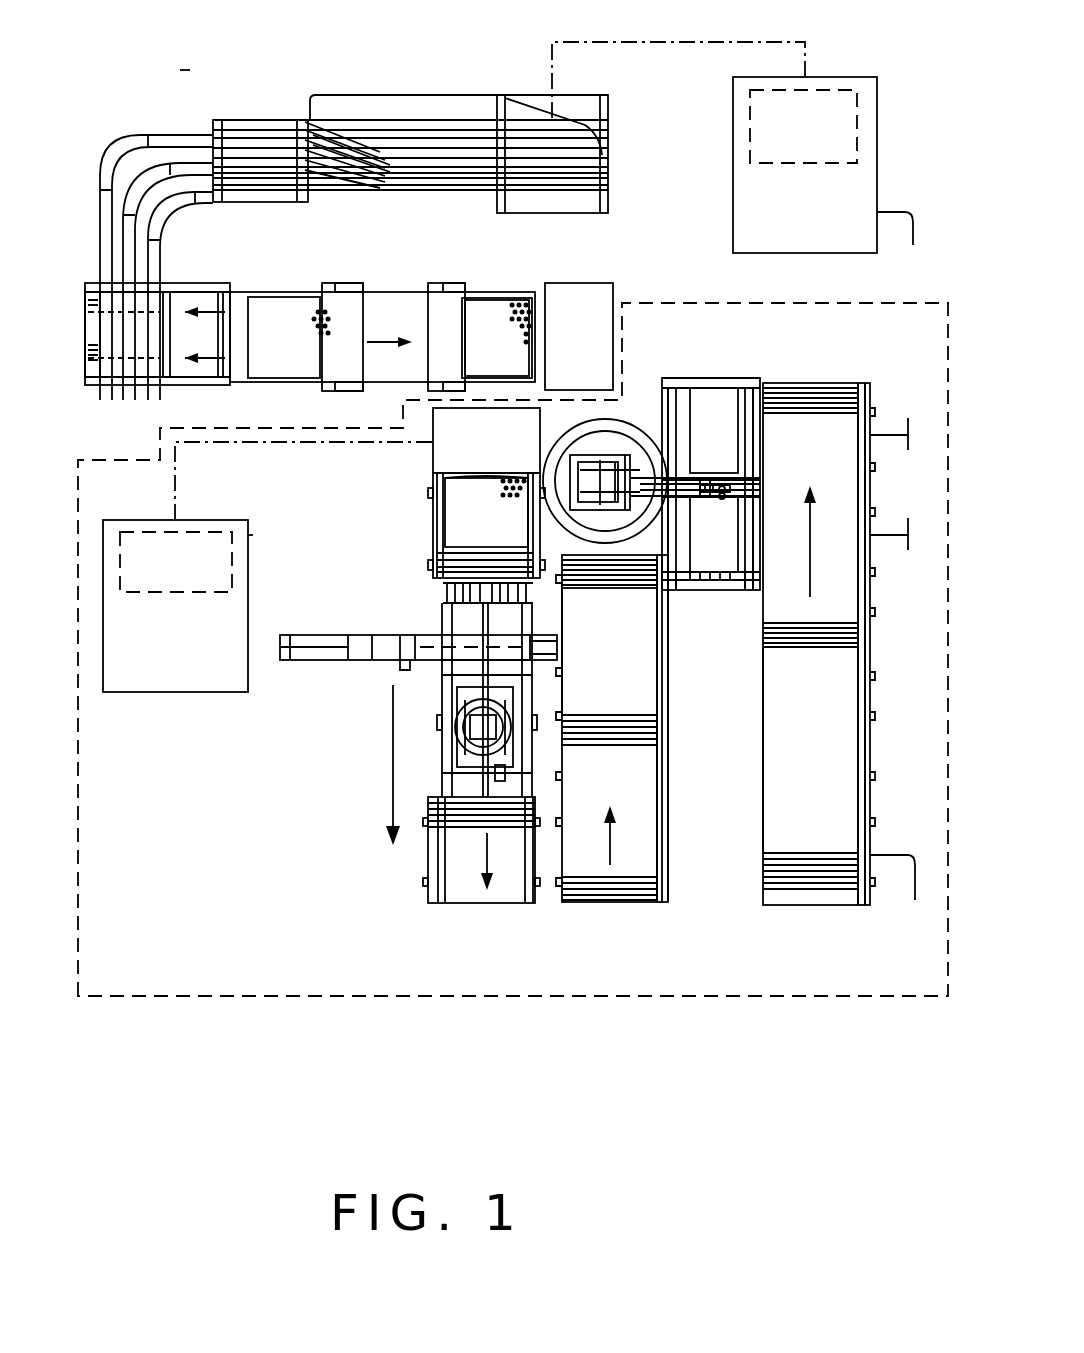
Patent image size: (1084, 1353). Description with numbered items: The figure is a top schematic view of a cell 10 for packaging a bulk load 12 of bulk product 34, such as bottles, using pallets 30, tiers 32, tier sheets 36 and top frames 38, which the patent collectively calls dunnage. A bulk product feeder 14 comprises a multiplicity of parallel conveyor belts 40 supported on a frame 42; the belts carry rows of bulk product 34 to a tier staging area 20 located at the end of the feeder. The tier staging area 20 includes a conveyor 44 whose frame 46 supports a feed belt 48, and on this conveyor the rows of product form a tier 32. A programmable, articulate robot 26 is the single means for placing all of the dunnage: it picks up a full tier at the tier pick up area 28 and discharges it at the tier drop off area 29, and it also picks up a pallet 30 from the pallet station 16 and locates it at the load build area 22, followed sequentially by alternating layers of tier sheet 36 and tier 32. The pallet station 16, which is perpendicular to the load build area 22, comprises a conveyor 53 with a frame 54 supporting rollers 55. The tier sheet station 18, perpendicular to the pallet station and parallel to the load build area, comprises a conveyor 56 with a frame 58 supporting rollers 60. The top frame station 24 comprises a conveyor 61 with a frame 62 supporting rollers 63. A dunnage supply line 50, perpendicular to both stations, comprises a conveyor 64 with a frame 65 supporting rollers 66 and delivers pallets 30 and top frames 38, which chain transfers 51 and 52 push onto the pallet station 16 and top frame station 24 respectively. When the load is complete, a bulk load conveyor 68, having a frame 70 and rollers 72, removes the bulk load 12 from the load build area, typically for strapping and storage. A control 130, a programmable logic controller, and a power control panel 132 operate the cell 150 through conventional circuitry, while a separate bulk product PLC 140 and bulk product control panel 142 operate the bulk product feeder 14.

The cell 10 is at (197, 60).
The bulk load 12 is at (503, 535).
The bulk product feeder 14 is at (262, 118).
The pallet station 16 is at (757, 560).
The tier sheet station 18 is at (612, 905).
The tier staging area 20 is at (492, 293).
The load build area 22 is at (452, 490).
The top frame station 24 is at (755, 452).
The robot 26 is at (622, 422).
The tier pick up area 28 is at (595, 350).
The tier drop off area 29 is at (500, 457).
The pallet 30 is at (730, 547).
The tier 32 is at (505, 350).
The bulk product 34 is at (523, 300).
The tier sheet 36 is at (625, 639).
The top frame 38 is at (730, 437).
The conveyor belts 40 is at (92, 195).
The frame 42 is at (195, 283).
The conveyor 44 is at (382, 392).
The frame 46 is at (455, 286).
The feed belt 48 is at (303, 292).
The dunnage supply line 50 is at (900, 899).
The chain transfer 51 is at (910, 525).
The chain transfer 52 is at (910, 432).
The conveyor 53 is at (742, 592).
The frame 54 is at (862, 655).
The rollers 55 is at (716, 588).
The conveyor 56 is at (555, 860).
The frame 58 is at (668, 895).
The rollers 60 is at (598, 745).
The conveyor 61 is at (722, 378).
The frame 62 is at (730, 392).
The rollers 63 is at (672, 385).
The conveyor 64 is at (858, 770).
The frame 65 is at (868, 762).
The rollers 66 is at (812, 650).
The bulk load conveyor 68 is at (440, 512).
The frame 70 is at (442, 543).
The rollers 72 is at (445, 570).
The control 130 is at (152, 520).
The power control panel 132 is at (250, 540).
The bulk product PLC 140 is at (835, 90).
The bulk product control panel 142 is at (910, 248).
The cell 150 is at (378, 996).